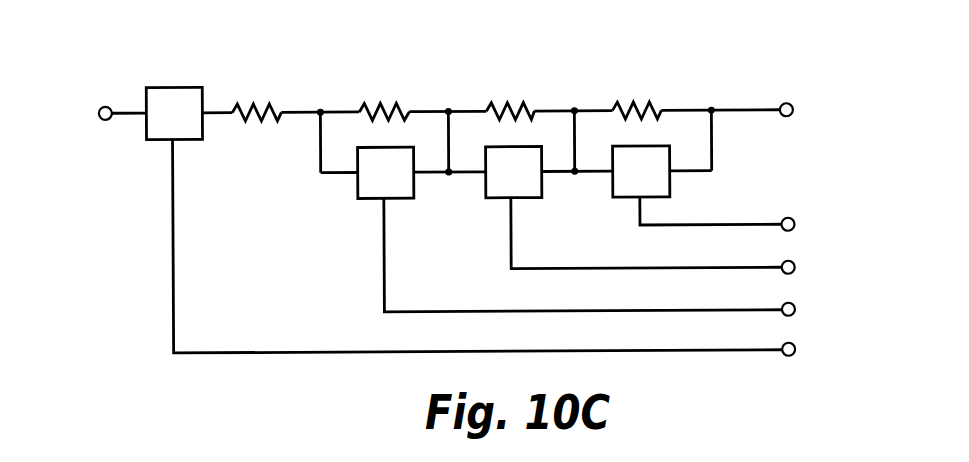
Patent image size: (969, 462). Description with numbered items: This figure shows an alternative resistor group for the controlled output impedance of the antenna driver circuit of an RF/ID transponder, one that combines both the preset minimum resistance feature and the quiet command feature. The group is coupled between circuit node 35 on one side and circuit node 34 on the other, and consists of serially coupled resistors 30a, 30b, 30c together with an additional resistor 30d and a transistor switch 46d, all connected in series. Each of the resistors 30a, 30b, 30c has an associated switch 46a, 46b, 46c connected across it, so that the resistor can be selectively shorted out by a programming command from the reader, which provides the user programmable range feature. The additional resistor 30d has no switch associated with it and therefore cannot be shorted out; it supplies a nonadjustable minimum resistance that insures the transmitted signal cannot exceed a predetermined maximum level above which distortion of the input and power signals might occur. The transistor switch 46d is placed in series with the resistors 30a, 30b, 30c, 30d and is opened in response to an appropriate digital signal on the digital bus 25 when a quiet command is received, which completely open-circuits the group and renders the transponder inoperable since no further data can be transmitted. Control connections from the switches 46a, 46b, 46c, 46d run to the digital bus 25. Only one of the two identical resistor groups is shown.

The digital bus 25 is at (793, 207).
The resistor 30a is at (650, 103).
The resistor 30b is at (523, 103).
The resistor 30c is at (397, 103).
The additional resistor 30d is at (271, 103).
The circuit node 34 is at (791, 118).
The circuit node 35 is at (106, 118).
The switch 46a is at (619, 202).
The switch 46b is at (493, 202).
The switch 46c is at (373, 202).
The transistor switch 46d is at (163, 86).